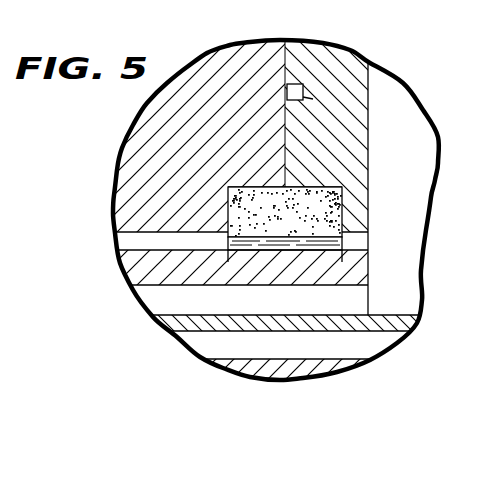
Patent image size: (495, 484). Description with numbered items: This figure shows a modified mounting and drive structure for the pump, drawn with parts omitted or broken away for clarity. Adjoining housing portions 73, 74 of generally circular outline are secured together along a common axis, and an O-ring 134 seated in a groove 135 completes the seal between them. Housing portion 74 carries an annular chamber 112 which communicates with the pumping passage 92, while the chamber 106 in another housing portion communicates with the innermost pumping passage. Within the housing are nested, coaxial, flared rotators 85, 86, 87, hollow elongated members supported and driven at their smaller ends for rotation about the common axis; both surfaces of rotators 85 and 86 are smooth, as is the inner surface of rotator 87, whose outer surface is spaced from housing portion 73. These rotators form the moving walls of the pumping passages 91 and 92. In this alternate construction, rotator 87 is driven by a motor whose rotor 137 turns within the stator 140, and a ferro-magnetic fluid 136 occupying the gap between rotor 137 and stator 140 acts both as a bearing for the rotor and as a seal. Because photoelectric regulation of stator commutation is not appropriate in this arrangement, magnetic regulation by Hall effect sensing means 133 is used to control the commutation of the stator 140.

The housing portion 73 is at (207, 70).
The housing portion 74 is at (340, 62).
The O-ring 134 is at (282, 95).
The groove 135 is at (313, 99).
The stator 140 is at (313, 192).
The annular chamber 112 is at (410, 175).
The Hall effect sensing means 133 is at (333, 228).
The ferro-magnetic fluid 136 is at (343, 244).
The rotator 87 is at (140, 267).
The pumping passage 92 is at (240, 309).
The rotor 137 is at (303, 256).
The rotator 86 is at (170, 322).
The pumping passage 91 is at (298, 354).
The rotator 85 is at (228, 366).
The chamber 106 is at (10, 138).